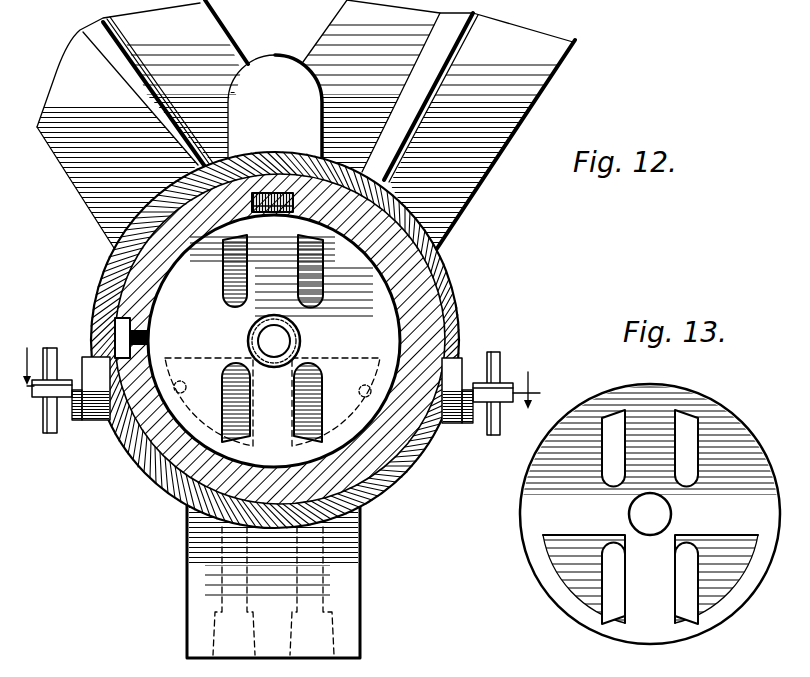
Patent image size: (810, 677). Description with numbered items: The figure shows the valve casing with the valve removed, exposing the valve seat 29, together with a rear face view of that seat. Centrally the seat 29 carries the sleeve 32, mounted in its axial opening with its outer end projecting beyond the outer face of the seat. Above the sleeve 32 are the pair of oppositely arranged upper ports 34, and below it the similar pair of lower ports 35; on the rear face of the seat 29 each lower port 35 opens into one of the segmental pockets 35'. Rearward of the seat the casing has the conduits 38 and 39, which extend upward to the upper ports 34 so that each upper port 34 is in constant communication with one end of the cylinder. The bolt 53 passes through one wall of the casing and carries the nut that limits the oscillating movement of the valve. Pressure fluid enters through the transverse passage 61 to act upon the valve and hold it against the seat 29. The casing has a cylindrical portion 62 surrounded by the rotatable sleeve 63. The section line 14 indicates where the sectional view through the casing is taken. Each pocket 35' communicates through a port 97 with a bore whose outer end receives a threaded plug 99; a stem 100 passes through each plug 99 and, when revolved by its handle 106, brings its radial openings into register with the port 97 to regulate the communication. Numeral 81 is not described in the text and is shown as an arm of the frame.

In FIG. 12, the section line 14 is at (290, 367).
In FIG. 12, the valve seat 29 is at (274, 341).
In FIG. 13, the valve seat 29 is at (730, 415).
In FIG. 12, the sleeve 32 is at (251, 336).
In FIG. 12, the upper ports 34 is at (221, 297).
In FIG. 13, the upper ports 34 is at (598, 472).
In FIG. 12, the lower ports 35 is at (272, 402).
In FIG. 13, the lower ports 35 is at (650, 584).
In FIG. 12, the segmental pockets 35' is at (272, 387).
In FIG. 13, the segmental pockets 35' is at (650, 555).
In FIG. 12, the conduit 38 is at (324, 597).
In FIG. 12, the conduit 39 is at (222, 570).
In FIG. 12, the bolt 53 is at (139, 322).
In FIG. 12, the transverse passage 61 is at (276, 192).
In FIG. 12, the cylindrical portion 62 is at (413, 305).
In FIG. 12, the rotatable sleeve 63 is at (111, 262).
In FIG. 12, the yoke arms 81 is at (73, 47).
In FIG. 12, the ports 97 is at (185, 386).
In FIG. 12, the threaded plugs 99 is at (77, 421).
In FIG. 12, the stems 100 is at (62, 381).
In FIG. 12, the handles 106 is at (48, 434).